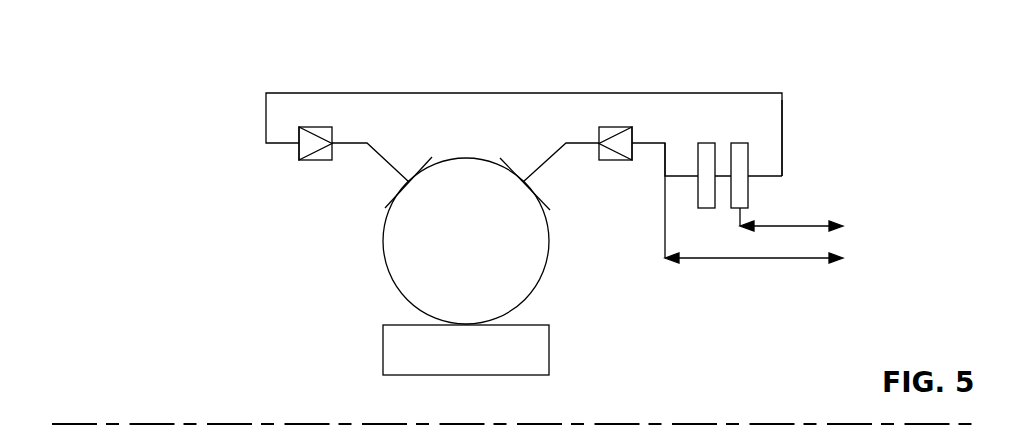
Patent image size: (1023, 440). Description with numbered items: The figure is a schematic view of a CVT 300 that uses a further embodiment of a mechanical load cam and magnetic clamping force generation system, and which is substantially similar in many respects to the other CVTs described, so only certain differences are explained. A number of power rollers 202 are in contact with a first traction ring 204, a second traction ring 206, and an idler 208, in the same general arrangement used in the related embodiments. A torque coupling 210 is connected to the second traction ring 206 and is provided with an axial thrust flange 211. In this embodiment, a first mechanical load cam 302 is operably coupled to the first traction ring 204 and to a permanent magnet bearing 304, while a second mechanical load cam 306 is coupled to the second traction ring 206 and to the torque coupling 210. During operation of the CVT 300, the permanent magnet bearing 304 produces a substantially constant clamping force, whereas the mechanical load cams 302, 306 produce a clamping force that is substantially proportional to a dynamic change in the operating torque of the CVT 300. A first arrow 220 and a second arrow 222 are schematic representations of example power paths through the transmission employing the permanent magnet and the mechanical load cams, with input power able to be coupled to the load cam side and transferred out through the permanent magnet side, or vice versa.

The CVT 300 is at (136, 135).
The torque coupling 210 is at (483, 93).
The axial thrust flange 211 is at (782, 118).
The second mechanical load cam 306 is at (333, 135).
The first mechanical load cam 302 is at (633, 135).
The permanent magnet bearing 304 is at (724, 120).
The second traction ring 206 is at (380, 156).
The first traction ring 204 is at (552, 158).
The power rollers 202 is at (387, 242).
The idler 208 is at (383, 355).
The first arrow 220 is at (773, 258).
The second arrow 222 is at (807, 226).